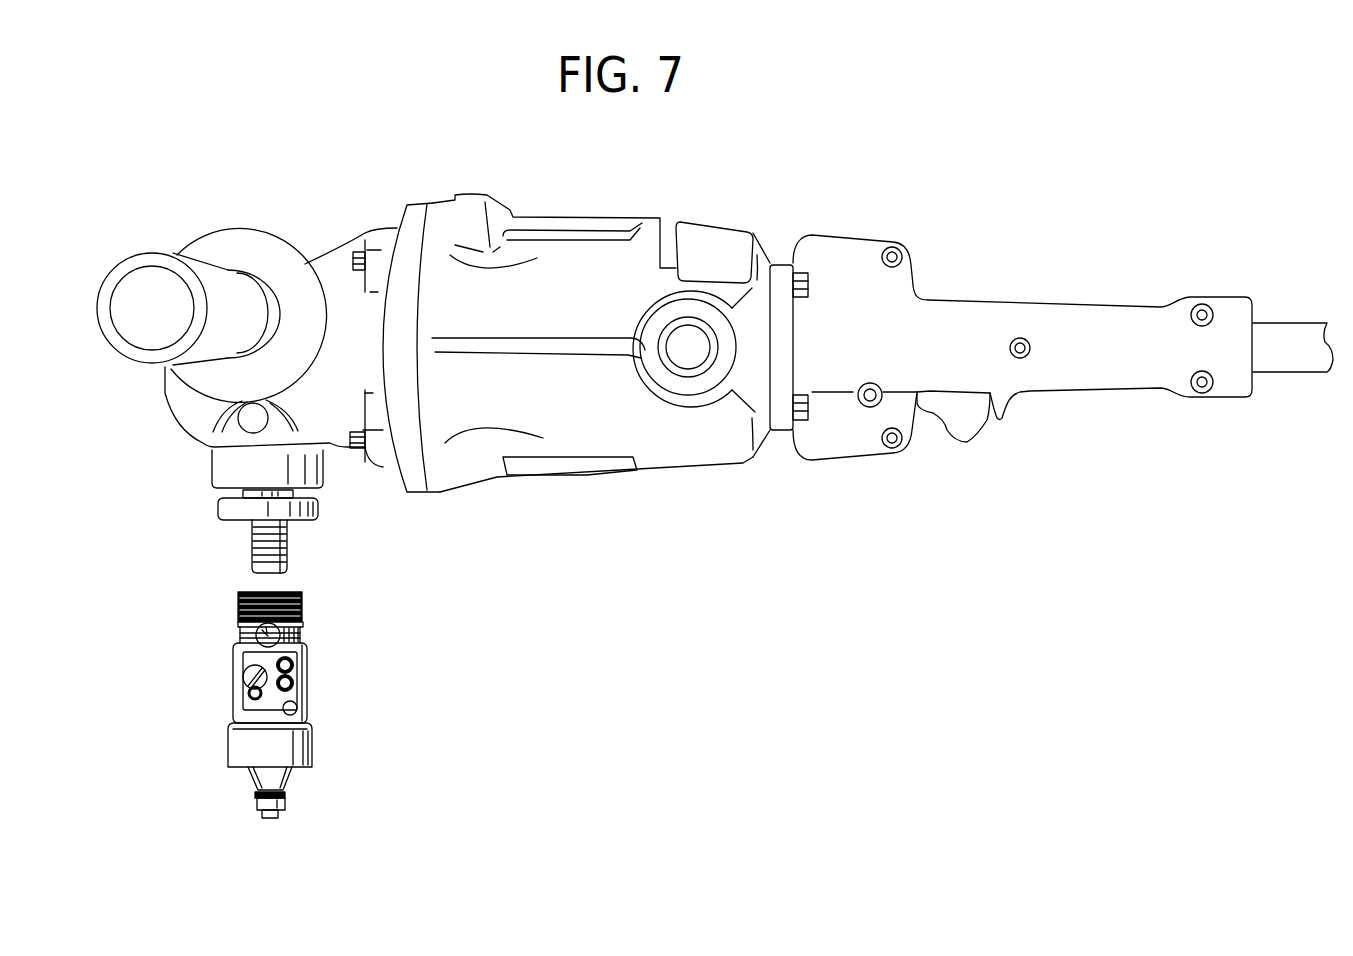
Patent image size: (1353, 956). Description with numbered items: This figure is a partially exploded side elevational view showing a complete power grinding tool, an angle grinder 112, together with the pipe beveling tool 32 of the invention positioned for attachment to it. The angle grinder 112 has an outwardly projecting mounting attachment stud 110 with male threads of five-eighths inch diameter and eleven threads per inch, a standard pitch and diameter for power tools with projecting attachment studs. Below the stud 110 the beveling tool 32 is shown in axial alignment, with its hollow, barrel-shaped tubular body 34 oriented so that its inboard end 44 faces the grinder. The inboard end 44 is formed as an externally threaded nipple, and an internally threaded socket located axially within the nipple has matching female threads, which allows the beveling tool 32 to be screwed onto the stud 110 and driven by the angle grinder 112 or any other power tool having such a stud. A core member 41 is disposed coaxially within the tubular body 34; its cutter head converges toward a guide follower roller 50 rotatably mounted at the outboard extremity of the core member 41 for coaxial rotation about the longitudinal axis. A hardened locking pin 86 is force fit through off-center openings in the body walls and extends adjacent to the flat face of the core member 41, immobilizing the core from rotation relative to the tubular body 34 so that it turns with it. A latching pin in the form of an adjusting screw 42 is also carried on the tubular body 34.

The angle grinder 112 is at (715, 357).
The mounting attachment stud 110 is at (268, 544).
The pipe beveling tool 32 is at (306, 705).
The inboard end 44 is at (300, 603).
The hardened locking pin 86 is at (281, 631).
The adjusting screw 42 is at (239, 672).
The tubular body 34 is at (316, 727).
The core member 41 is at (248, 781).
The guide follower roller 50 is at (290, 803).